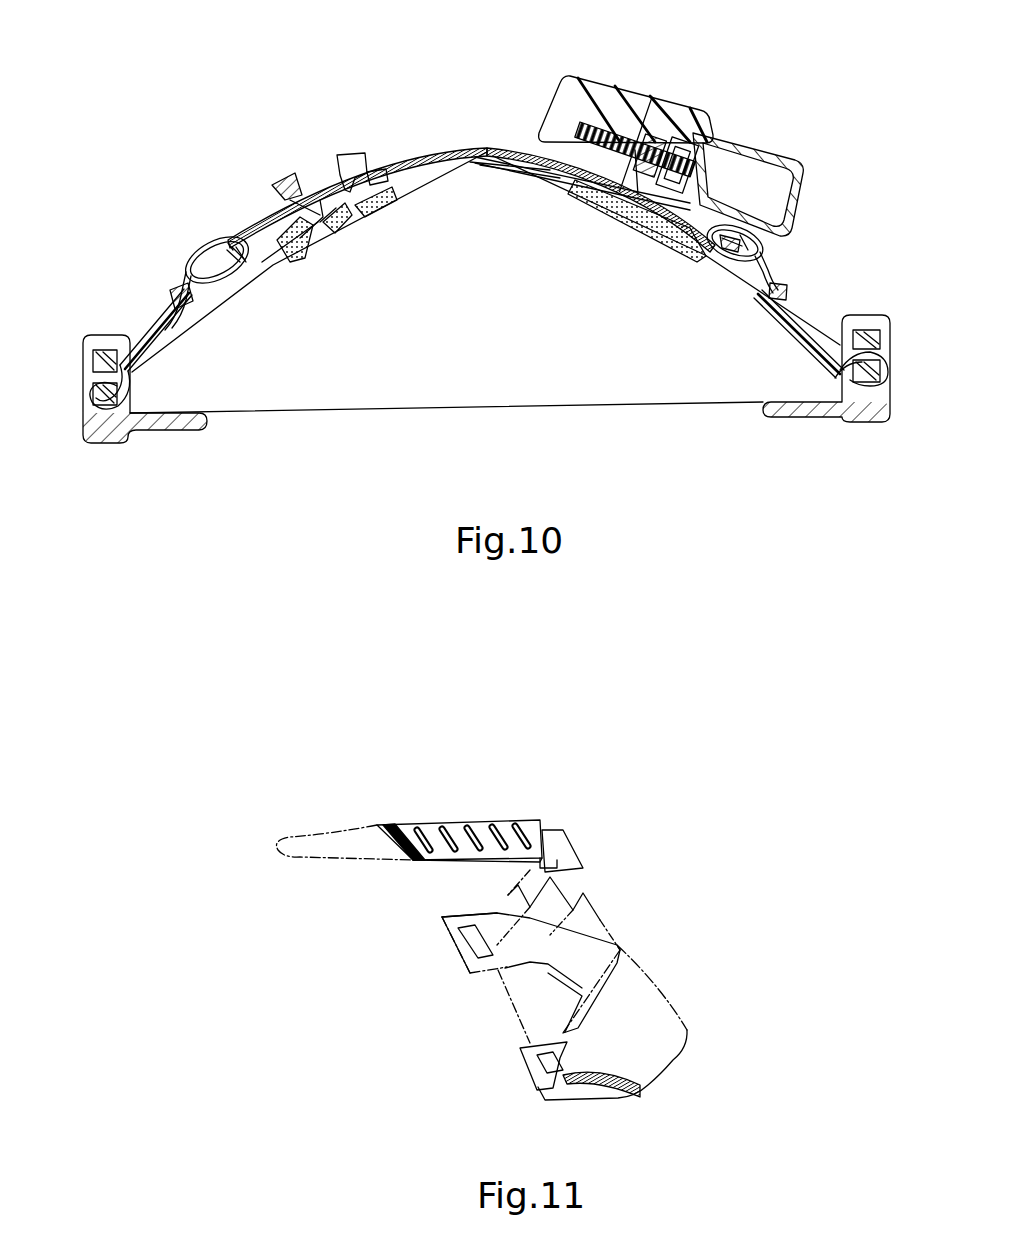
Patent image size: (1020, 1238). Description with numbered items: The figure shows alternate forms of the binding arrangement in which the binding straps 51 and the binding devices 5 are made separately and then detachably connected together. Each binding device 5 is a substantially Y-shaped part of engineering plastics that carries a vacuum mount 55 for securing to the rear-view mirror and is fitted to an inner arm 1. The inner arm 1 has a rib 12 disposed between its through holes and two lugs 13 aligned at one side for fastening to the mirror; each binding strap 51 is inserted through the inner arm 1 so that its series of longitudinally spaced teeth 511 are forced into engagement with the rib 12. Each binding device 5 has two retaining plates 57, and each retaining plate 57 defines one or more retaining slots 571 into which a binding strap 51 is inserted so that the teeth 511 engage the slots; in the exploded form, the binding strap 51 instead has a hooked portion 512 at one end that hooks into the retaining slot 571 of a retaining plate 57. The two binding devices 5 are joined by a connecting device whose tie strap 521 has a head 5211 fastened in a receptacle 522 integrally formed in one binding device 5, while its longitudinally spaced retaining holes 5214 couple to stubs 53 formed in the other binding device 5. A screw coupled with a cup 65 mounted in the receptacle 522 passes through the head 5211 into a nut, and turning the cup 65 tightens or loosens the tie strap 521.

In FIG. 10, the inner arm 1 is at (83, 342).
In FIG. 10, the rib 12 is at (93, 394).
In FIG. 10, the lug 13 is at (165, 423).
In FIG. 10, the binding device 5 is at (273, 267).
In FIG. 11, the binding device 5 is at (650, 1067).
In FIG. 10, the binding strap 51 is at (203, 248).
In FIG. 11, the binding strap 51 is at (410, 828).
In FIG. 10, the teeth 511 is at (232, 245).
In FIG. 11, the teeth 511 is at (468, 826).
In FIG. 11, the hooked portion 512 is at (567, 852).
In FIG. 10, the tie strap 521 is at (503, 148).
In FIG. 10, the head 5211 is at (663, 123).
In FIG. 10, the retaining holes 5214 is at (376, 170).
In FIG. 10, the receptacle 522 is at (617, 90).
In FIG. 10, the stubs 53 is at (350, 153).
In FIG. 10, the vacuum mount 55 is at (367, 203).
In FIG. 10, the retaining plate 57 is at (212, 292).
In FIG. 11, the retaining plate 57 is at (533, 1043).
In FIG. 10, the retaining slot 571 is at (226, 282).
In FIG. 11, the retaining slot 571 is at (465, 938).
In FIG. 10, the cup 65 is at (780, 157).